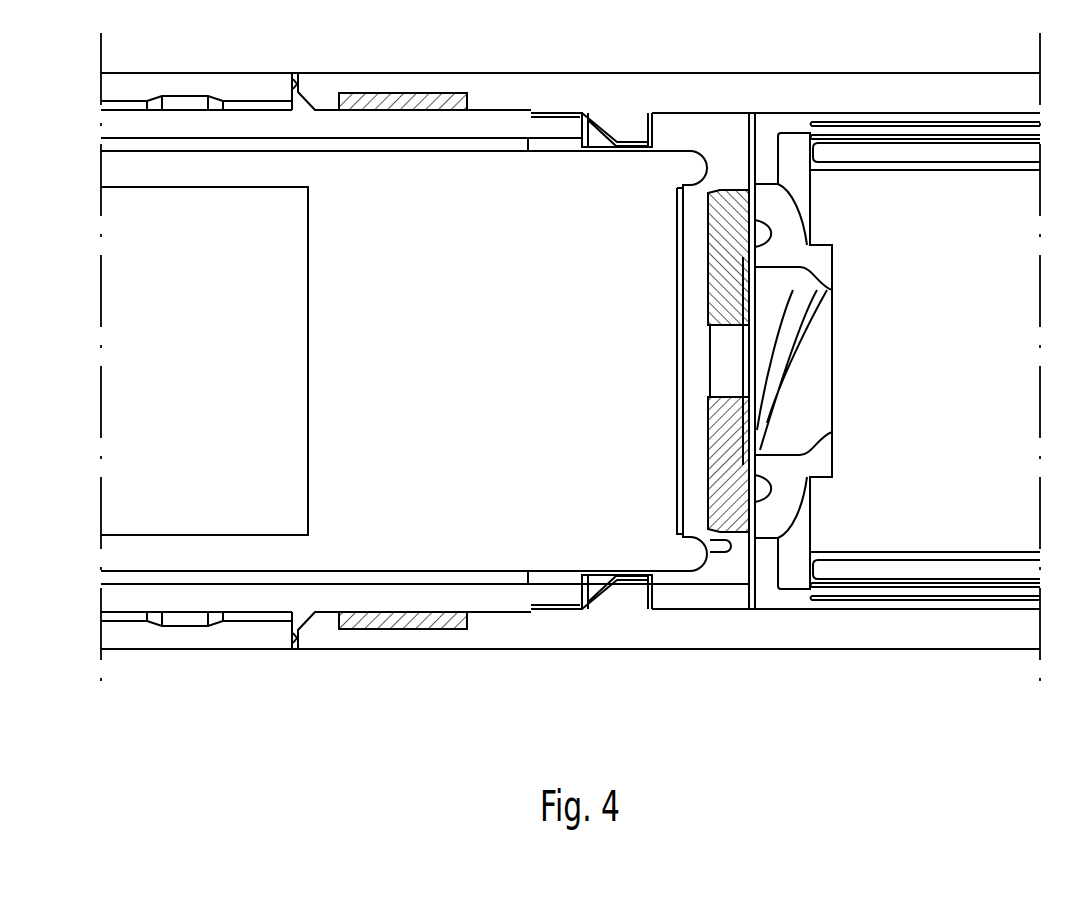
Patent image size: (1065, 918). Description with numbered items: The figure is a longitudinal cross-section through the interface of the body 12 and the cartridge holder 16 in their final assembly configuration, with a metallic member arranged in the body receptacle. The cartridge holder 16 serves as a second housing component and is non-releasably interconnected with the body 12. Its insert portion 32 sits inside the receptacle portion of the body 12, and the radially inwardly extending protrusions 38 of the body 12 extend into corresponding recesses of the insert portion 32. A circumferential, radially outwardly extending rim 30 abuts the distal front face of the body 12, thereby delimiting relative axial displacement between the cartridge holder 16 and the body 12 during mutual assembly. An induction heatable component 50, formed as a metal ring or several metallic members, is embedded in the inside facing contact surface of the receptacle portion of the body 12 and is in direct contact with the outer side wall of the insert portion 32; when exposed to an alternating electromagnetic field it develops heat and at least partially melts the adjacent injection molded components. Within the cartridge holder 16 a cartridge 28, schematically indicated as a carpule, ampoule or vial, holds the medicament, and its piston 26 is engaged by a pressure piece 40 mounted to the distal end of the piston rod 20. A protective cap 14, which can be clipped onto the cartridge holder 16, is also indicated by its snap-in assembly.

The body 12 is at (680, 88).
The protective cap 14 is at (253, 635).
The cartridge holder 16 is at (130, 123).
The piston rod 20 is at (783, 290).
The piston 26 is at (123, 275).
The cartridge 28 is at (182, 168).
The rim 30 is at (298, 632).
The insert portion 32 is at (495, 125).
The protrusions 38 is at (627, 125).
The pressure piece 40 is at (733, 207).
The induction heatable component 50 is at (387, 632).